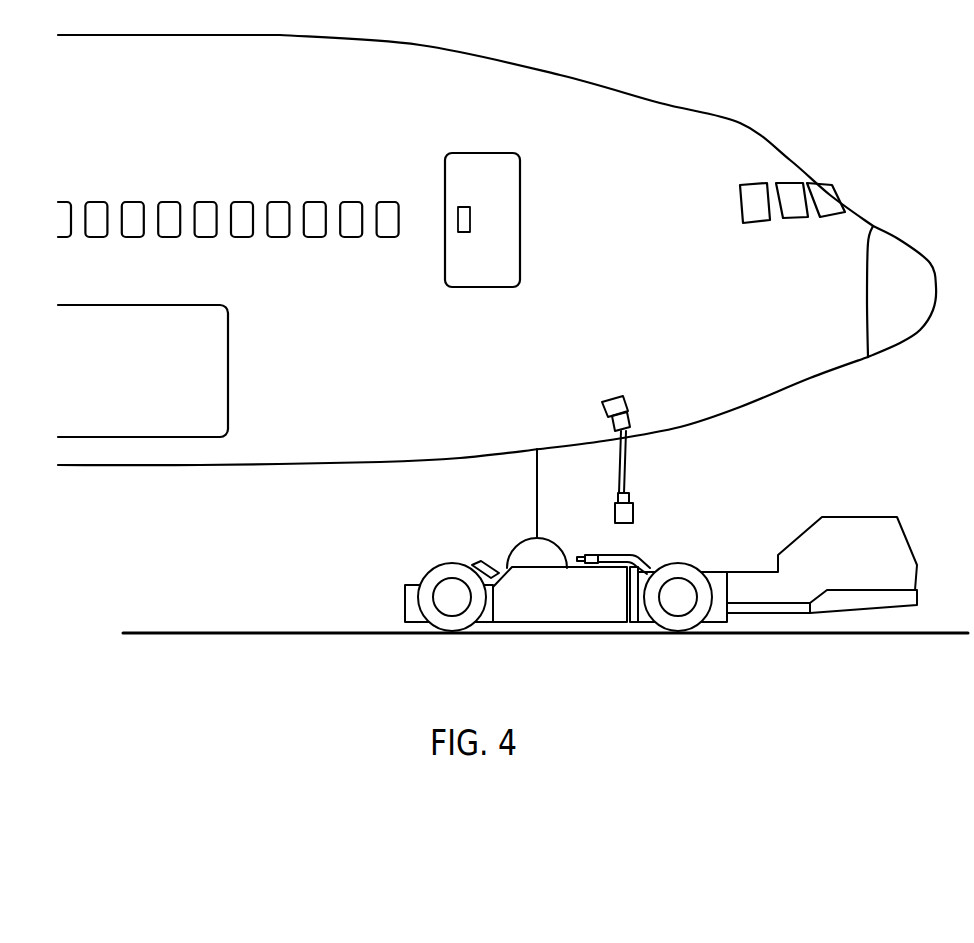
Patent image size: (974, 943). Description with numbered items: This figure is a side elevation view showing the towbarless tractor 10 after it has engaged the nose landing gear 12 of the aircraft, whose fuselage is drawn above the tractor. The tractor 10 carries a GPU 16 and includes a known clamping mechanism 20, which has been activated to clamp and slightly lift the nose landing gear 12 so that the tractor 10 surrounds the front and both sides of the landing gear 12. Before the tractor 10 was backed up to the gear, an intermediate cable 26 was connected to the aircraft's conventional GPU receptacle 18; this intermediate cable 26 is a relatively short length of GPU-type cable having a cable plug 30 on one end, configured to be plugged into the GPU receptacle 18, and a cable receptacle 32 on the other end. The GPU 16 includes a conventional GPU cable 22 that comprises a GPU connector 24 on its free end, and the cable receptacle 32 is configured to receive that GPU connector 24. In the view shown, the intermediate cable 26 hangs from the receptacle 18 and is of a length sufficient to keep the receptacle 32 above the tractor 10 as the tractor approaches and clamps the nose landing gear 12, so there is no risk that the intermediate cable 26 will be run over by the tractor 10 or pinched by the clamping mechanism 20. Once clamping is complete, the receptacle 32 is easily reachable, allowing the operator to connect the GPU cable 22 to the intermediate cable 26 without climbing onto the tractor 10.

The towbarless tractor 10 is at (880, 492).
The nose landing gear 12 is at (518, 532).
The GPU 16 is at (716, 566).
The GPU receptacle 18 is at (627, 405).
The clamping mechanism 20 is at (496, 566).
The GPU cable 22 is at (643, 565).
The GPU connector 24 is at (592, 554).
The intermediate cable 26 is at (627, 468).
The cable plug 30 is at (630, 421).
The cable receptacle 32 is at (633, 508).